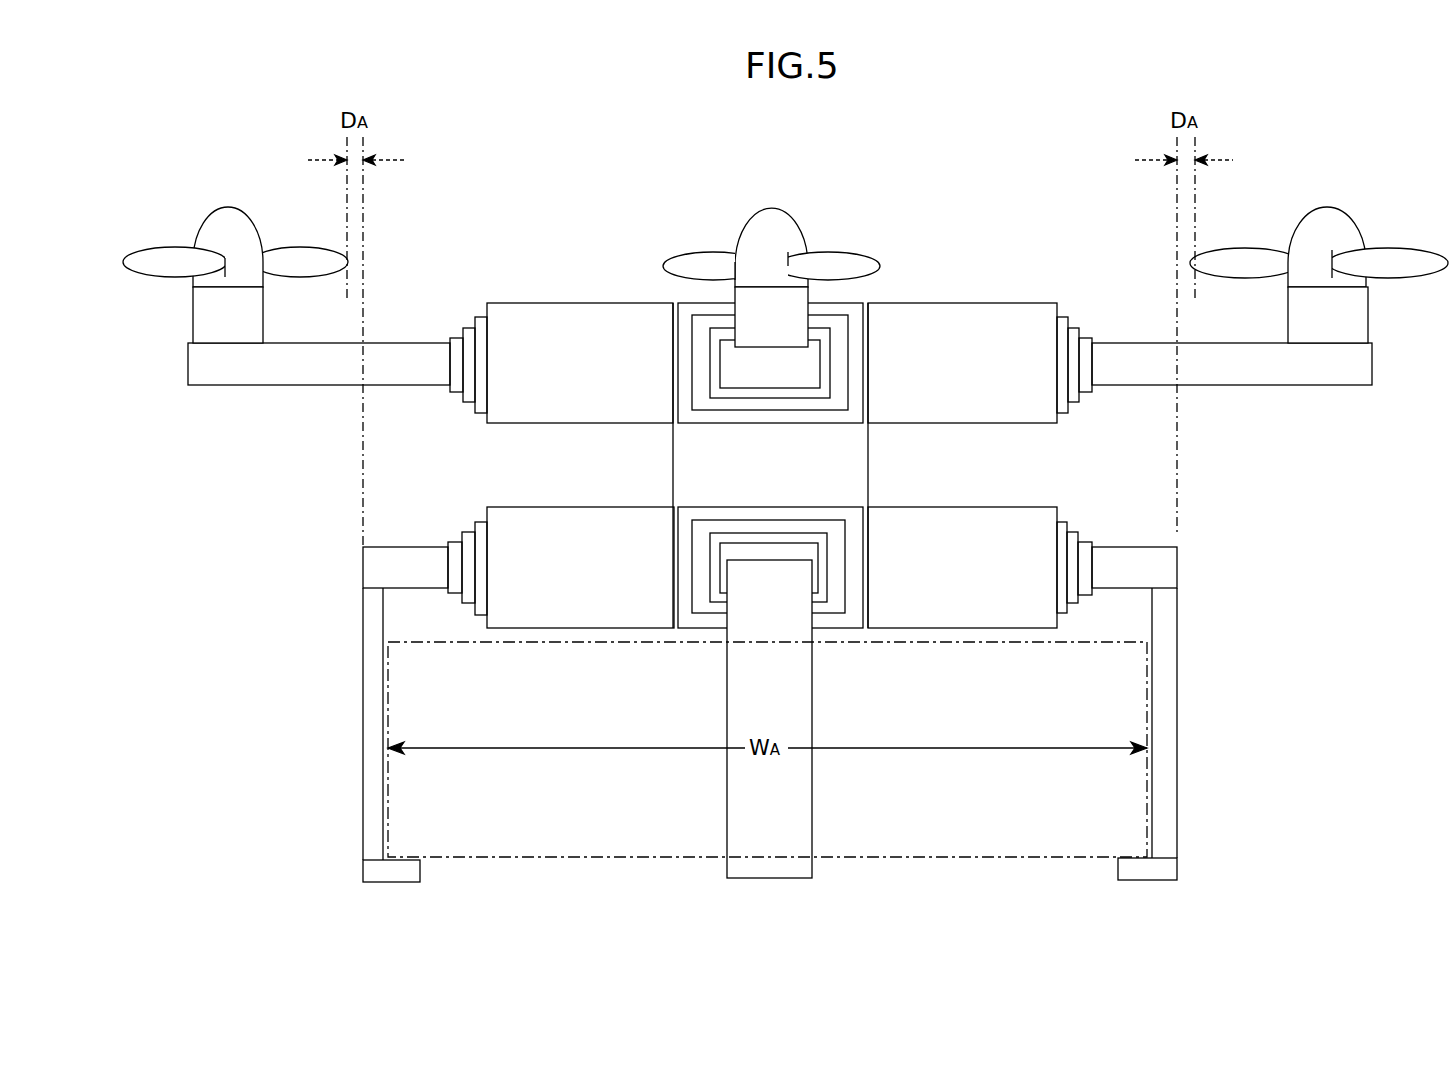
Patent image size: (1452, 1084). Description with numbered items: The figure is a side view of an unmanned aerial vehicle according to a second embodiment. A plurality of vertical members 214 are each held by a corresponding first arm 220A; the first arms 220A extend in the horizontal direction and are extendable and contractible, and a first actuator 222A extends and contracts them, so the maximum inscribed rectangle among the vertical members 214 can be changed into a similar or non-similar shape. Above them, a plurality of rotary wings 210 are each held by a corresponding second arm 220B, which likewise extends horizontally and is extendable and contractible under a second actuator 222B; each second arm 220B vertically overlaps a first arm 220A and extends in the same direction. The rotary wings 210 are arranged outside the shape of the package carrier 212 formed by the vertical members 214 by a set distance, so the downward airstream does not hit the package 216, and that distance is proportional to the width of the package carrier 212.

The rotary wing 210 is at (155, 263).
The package carrier 212 is at (1208, 632).
The vertical member 214 is at (373, 692).
The package 216 is at (1003, 855).
The first arm 220A is at (468, 533).
The second arm 220B is at (470, 330).
The first actuator 222A is at (837, 507).
The second actuator 222B is at (853, 303).